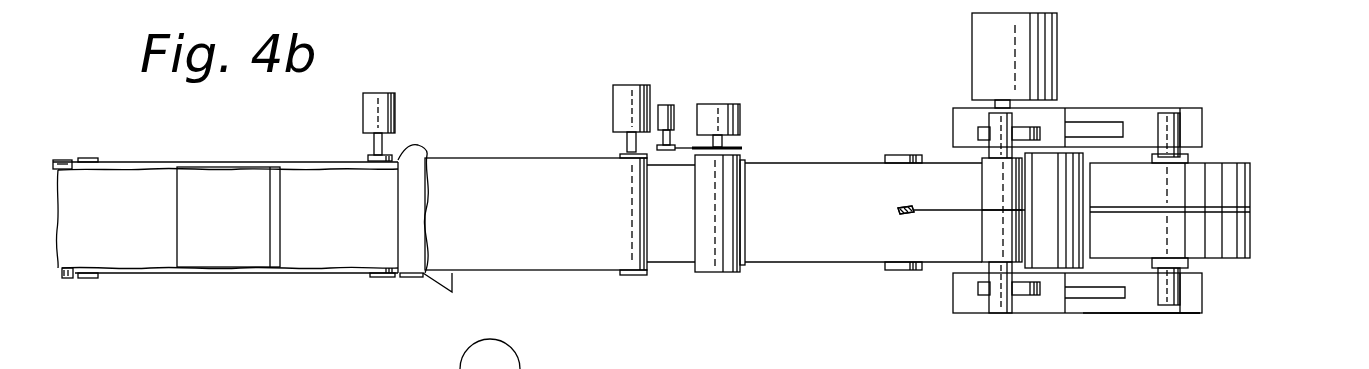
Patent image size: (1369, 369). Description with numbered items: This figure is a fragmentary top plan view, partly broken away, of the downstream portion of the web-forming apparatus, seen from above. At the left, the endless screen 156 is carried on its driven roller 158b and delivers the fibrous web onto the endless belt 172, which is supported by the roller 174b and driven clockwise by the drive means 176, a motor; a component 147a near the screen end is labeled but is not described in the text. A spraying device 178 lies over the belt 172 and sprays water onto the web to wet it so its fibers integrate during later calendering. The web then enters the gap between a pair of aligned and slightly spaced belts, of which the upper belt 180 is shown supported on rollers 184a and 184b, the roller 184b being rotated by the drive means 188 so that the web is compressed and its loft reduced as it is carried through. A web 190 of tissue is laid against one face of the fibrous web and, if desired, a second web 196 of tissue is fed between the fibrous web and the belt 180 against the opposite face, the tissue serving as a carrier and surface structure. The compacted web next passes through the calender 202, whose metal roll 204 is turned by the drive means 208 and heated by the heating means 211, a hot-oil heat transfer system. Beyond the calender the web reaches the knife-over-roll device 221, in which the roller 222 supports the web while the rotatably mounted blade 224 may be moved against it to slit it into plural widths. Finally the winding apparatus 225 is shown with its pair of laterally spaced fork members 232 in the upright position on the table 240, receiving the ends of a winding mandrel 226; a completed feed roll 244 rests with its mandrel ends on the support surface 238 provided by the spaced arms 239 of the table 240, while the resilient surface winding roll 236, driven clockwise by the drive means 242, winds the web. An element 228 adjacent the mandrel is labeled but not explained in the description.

The support foot 147a is at (90, 280).
The endless screen 156 is at (68, 278).
The roller 158b is at (60, 160).
The endless belt 172 is at (265, 162).
The roller 174b is at (385, 277).
The drive means 176 is at (392, 93).
The spraying device 178 is at (240, 250).
The endless belt 180 is at (517, 158).
The roller 184a is at (405, 277).
The roller 184b is at (630, 275).
The drive means 188 is at (640, 85).
The web of tissue 190 is at (452, 280).
The second web of tissue 196 is at (422, 152).
The calender 202 is at (738, 272).
The metal roll 204 is at (712, 272).
The drive means 208 is at (672, 105).
The heating means 211 is at (736, 104).
The knife-over-roll device 221 is at (905, 214).
The roller 222 is at (905, 270).
The blade 224 is at (903, 207).
The apparatus for winding feed rolls 225 is at (1152, 316).
The mandrel 226 is at (996, 313).
The roller 228 is at (985, 258).
The fork member 232 is at (975, 132).
The resilient surface winding roll 236 is at (1060, 165).
The support surface 238 is at (1202, 108).
The spaced arms 239 is at (1150, 108).
The table 240 is at (1100, 313).
The drive means 242 is at (1058, 42).
The completed feed roll 244 is at (1250, 222).